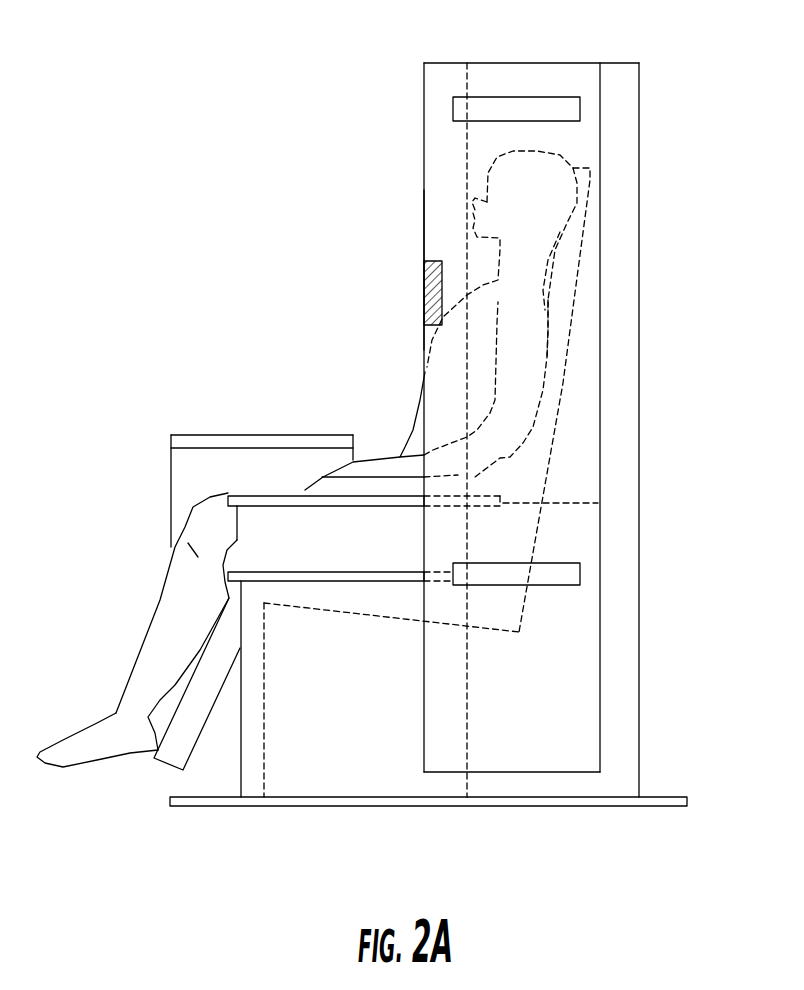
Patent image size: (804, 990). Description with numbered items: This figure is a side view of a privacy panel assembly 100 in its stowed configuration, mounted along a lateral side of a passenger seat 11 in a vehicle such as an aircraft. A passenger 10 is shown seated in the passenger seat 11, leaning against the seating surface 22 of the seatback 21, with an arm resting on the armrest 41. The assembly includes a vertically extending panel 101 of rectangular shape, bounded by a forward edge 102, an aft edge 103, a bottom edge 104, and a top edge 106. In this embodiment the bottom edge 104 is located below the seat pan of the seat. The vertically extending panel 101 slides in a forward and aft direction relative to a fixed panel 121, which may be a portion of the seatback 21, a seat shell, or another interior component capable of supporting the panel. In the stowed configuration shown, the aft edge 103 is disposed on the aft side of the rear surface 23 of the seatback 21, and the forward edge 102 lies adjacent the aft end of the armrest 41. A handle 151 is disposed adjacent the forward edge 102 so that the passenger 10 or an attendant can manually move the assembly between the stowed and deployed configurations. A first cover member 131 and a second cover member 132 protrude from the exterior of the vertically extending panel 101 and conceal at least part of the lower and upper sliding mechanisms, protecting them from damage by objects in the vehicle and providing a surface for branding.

The privacy panel assembly 100 is at (275, 168).
The top edge 106 is at (431, 63).
The vertically extending panel 101 is at (432, 195).
The forward edge 102 is at (424, 244).
The aft edge 103 is at (600, 140).
The fixed panel 121 is at (620, 304).
The second cover member 132 is at (543, 103).
The first cover member 131 is at (540, 568).
The handle 151 is at (424, 300).
The bottom edge 104 is at (506, 772).
The passenger seat 11 is at (359, 739).
The armrest 41 is at (307, 503).
The seatback 21 is at (527, 473).
The seating surface 22 is at (548, 318).
The rear surface 23 is at (563, 387).
The passenger 10 is at (405, 440).